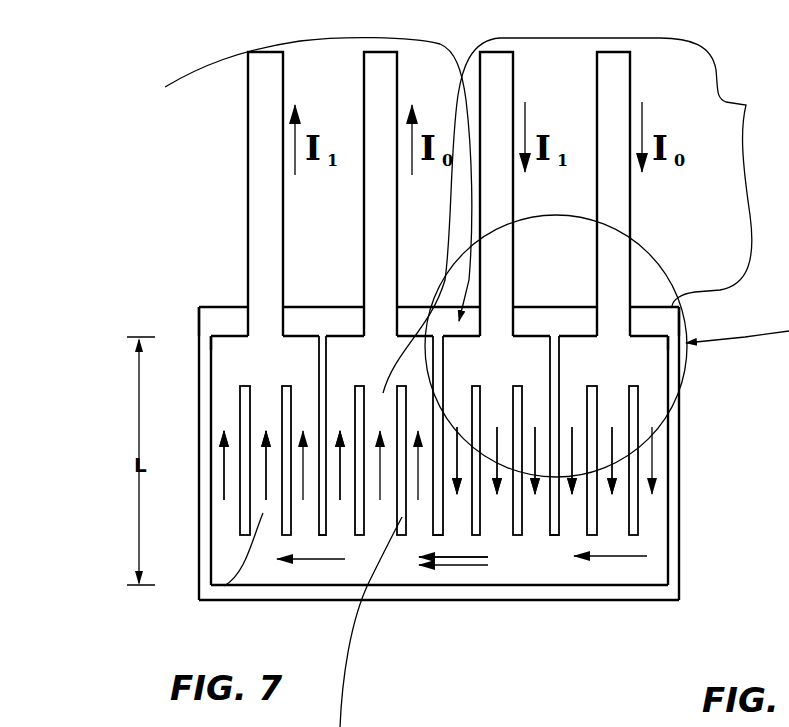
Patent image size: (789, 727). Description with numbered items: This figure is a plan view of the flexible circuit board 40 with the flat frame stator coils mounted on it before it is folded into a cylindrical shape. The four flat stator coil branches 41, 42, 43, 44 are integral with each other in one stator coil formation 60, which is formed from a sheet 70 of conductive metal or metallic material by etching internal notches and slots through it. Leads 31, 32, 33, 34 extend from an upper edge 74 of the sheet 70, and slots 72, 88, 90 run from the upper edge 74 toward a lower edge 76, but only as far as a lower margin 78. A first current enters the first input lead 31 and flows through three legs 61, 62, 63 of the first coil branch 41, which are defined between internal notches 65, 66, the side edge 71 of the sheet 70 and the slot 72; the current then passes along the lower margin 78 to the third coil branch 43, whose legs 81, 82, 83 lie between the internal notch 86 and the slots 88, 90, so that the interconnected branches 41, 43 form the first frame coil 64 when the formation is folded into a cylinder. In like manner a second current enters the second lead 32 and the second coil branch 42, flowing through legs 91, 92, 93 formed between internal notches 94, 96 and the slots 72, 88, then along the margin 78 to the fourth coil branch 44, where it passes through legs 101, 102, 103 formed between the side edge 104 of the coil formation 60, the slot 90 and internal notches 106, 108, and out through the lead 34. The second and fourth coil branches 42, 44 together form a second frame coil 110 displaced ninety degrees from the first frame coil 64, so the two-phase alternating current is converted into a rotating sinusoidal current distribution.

The second frame coil 110 is at (238, 321).
The first frame coil 64 is at (581, 215).
The lead 34 is at (265, 88).
The lead 33 is at (390, 90).
The second lead 32 is at (503, 97).
The first input lead 31 is at (615, 100).
The fourth coil branch 44 is at (226, 323).
The third coil branch 43 is at (343, 324).
The leg 82 is at (405, 323).
The slot 90 is at (322, 377).
The slot 88 is at (442, 367).
The slot 72 is at (553, 372).
The internal notch 96 is at (478, 393).
The second coil branch 42 is at (625, 228).
The first coil branch 41 is at (651, 317).
The upper edge 74 is at (665, 319).
The internal notch 94 is at (622, 437).
The side edge 104 is at (198, 345).
The internal notch 108 is at (285, 384).
The internal notch 106 is at (241, 416).
The stator coil formation 60 is at (209, 458).
The leg 103 is at (222, 520).
The leg 102 is at (223, 588).
The leg 101 is at (282, 513).
The leg 83 is at (342, 507).
The internal notch 86 is at (365, 512).
The leg 81 is at (417, 517).
The sheet 70 is at (386, 591).
The flexible circuit board 40 is at (427, 602).
The leg 93 is at (457, 513).
The leg 92 is at (497, 512).
The lower edge 76 is at (513, 586).
The lower margin 78 is at (545, 560).
The leg 91 is at (547, 562).
The internal notch 66 is at (597, 516).
The leg 63 is at (522, 403).
The leg 62 is at (578, 417).
The leg 61 is at (660, 450).
The internal notch 65 is at (630, 522).
The side edge 71 is at (670, 565).